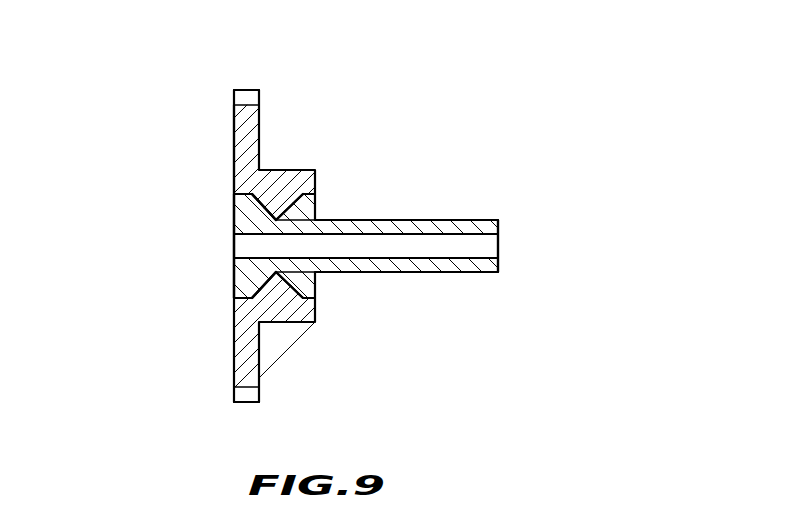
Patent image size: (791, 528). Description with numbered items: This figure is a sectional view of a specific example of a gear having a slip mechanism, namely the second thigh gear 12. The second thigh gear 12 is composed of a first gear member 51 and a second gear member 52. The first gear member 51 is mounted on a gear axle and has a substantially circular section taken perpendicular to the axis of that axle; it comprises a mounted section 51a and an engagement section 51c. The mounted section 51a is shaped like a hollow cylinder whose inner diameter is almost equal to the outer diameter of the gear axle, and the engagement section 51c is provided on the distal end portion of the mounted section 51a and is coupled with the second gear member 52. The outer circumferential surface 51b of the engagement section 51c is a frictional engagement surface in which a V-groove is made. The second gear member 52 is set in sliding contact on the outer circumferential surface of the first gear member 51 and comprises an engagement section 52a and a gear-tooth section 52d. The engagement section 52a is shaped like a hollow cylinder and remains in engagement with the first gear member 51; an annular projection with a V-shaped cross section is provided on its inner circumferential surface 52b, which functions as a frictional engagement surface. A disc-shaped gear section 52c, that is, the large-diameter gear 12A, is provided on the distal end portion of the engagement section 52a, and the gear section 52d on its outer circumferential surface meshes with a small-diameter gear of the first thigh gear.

The second thigh gear 12 is at (459, 108).
The large-diameter gear 12A is at (150, 146).
The first gear member 51 is at (417, 218).
The mounted section 51a is at (488, 218).
The outer circumferential surface 51b is at (272, 200).
The engagement section 51c is at (248, 222).
The second gear member 52 is at (261, 127).
The engagement section 52a is at (315, 173).
The inner circumferential surface 52b is at (315, 297).
The gear section 52c is at (247, 142).
The gear-tooth section 52d is at (250, 95).